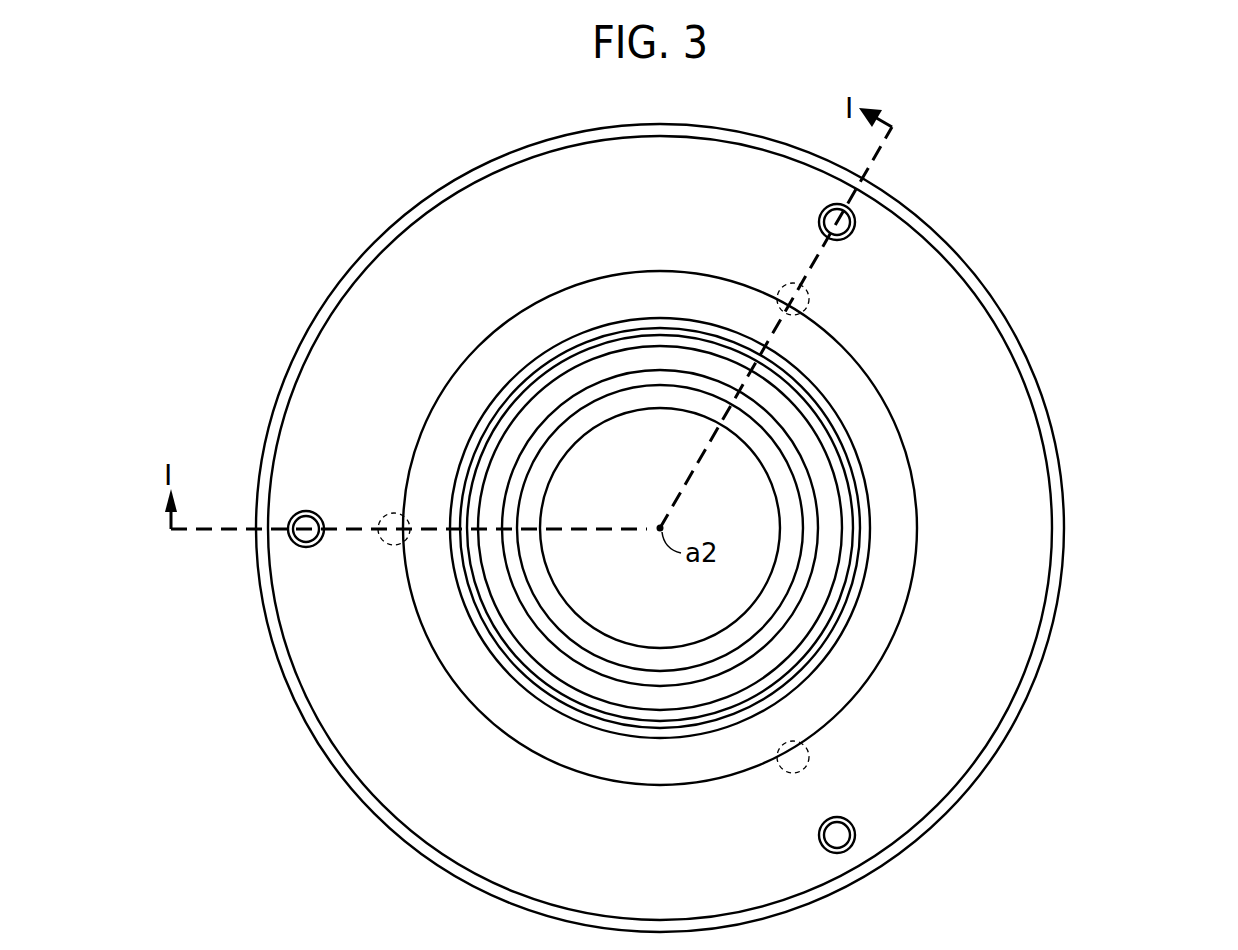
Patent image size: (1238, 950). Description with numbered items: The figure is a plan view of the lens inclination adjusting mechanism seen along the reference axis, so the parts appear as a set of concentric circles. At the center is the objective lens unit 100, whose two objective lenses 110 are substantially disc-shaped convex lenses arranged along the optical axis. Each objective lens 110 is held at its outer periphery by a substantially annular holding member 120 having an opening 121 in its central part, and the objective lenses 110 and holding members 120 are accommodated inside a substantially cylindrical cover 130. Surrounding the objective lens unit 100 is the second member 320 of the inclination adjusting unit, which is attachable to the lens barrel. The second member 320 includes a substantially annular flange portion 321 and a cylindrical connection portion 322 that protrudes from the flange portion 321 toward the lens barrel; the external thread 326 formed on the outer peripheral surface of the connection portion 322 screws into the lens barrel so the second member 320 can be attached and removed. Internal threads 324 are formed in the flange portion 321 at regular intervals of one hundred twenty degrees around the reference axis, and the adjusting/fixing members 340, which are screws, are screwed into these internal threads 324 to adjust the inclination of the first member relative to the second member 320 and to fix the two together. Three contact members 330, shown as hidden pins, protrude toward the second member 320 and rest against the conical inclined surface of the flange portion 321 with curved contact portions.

The objective lens unit 100 is at (850, 528).
The objective lens 110 is at (791, 475).
The holding member 120 is at (811, 517).
The opening 121 is at (760, 586).
The cover 130 is at (825, 554).
The second member 320 is at (575, 528).
The flange portion 321 is at (313, 452).
The connection portion 322 is at (577, 360).
The external thread 326 is at (462, 457).
The internal thread 324 is at (303, 541).
The contact member 330 is at (380, 536).
The adjusting/fixing member 340 is at (289, 538).